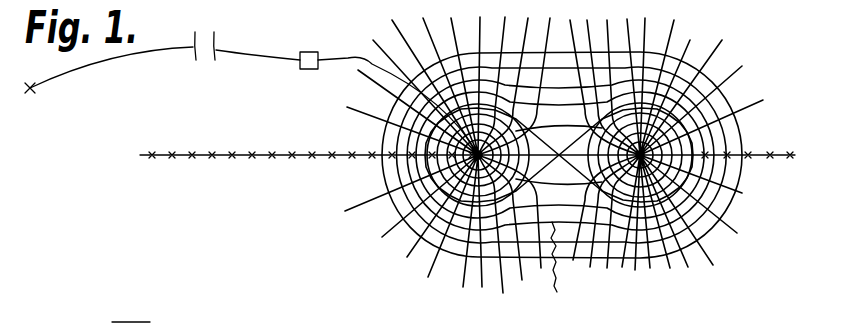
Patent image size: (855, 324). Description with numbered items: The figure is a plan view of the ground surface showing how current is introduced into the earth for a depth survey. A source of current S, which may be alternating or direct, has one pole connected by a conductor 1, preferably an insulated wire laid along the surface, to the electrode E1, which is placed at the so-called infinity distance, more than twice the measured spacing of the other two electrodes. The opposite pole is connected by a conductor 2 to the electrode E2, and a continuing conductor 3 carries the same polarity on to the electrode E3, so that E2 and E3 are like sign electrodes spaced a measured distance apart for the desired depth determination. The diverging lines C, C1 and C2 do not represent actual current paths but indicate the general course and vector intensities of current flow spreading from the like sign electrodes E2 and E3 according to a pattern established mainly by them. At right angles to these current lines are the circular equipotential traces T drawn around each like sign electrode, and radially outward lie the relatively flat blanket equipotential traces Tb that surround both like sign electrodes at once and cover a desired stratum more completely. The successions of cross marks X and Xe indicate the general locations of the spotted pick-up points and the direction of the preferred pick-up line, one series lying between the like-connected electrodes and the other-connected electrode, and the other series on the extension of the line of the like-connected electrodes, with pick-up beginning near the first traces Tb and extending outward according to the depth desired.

The conductor 1 is at (247, 52).
The conductor 2 is at (352, 61).
The continuing conductor 3 is at (548, 126).
The source of current S is at (309, 60).
The electrode E1 is at (35, 99).
The electrode E2 is at (478, 155).
The electrode E3 is at (562, 155).
The cross marks X is at (296, 152).
The cross marks Xe is at (787, 133).
The current lines C is at (388, 231).
The current lines C1 is at (410, 283).
The current lines C2 is at (500, 275).
The circular equipotential traces T is at (559, 185).
The blanket equipotential surface traces Tb is at (560, 286).